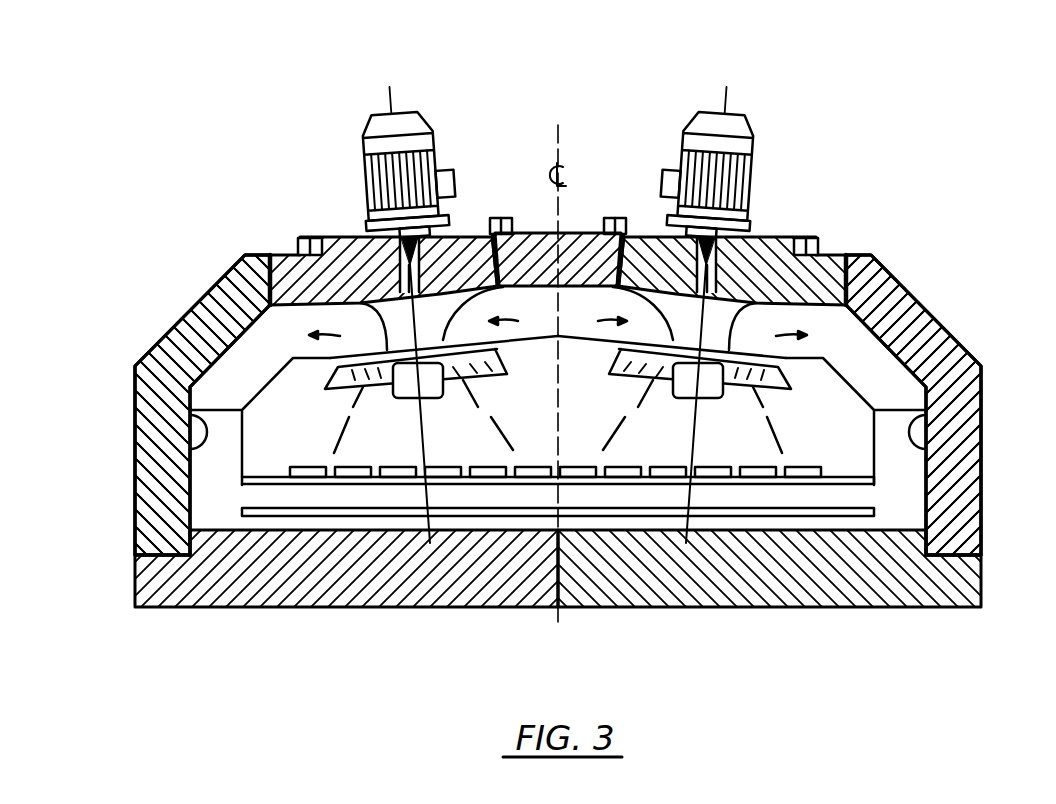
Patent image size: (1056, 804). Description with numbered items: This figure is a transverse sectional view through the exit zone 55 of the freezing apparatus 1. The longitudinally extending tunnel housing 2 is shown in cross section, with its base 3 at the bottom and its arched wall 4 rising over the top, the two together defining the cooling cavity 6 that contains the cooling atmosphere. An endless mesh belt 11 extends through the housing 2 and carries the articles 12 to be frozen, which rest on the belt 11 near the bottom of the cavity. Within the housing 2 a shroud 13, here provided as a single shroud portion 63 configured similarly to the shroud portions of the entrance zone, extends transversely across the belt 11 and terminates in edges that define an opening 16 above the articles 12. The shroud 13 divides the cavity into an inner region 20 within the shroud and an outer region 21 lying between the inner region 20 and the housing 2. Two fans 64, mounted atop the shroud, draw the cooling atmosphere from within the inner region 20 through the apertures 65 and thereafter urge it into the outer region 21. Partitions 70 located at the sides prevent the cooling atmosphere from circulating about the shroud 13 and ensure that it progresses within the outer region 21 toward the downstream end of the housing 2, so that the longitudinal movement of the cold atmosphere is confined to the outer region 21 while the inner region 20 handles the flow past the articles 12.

The freezing apparatus 1 is at (914, 208).
The tunnel housing 2 is at (203, 276).
The base 3 is at (232, 606).
The arched wall 4 is at (153, 396).
The cooling cavity 6 is at (283, 327).
The endless mesh belt 11 is at (358, 510).
The articles 12 is at (556, 485).
The shroud 13 is at (900, 287).
The opening 16 is at (476, 494).
The inner region 20 is at (514, 406).
The outer region 21 is at (598, 326).
The exit zone 55 is at (912, 100).
The single shroud portion 63 is at (178, 328).
The fans 64 is at (383, 122).
The apertures 65 is at (405, 380).
The partitions 70 is at (205, 430).